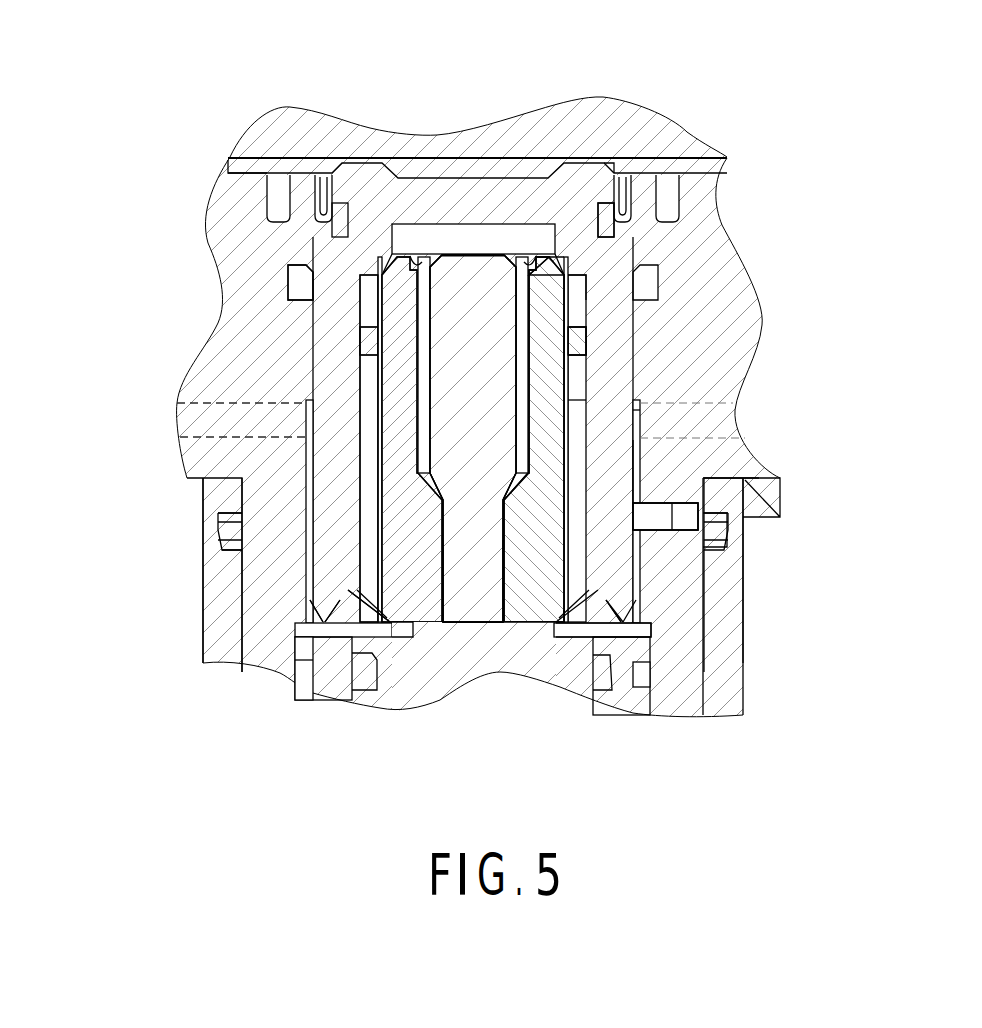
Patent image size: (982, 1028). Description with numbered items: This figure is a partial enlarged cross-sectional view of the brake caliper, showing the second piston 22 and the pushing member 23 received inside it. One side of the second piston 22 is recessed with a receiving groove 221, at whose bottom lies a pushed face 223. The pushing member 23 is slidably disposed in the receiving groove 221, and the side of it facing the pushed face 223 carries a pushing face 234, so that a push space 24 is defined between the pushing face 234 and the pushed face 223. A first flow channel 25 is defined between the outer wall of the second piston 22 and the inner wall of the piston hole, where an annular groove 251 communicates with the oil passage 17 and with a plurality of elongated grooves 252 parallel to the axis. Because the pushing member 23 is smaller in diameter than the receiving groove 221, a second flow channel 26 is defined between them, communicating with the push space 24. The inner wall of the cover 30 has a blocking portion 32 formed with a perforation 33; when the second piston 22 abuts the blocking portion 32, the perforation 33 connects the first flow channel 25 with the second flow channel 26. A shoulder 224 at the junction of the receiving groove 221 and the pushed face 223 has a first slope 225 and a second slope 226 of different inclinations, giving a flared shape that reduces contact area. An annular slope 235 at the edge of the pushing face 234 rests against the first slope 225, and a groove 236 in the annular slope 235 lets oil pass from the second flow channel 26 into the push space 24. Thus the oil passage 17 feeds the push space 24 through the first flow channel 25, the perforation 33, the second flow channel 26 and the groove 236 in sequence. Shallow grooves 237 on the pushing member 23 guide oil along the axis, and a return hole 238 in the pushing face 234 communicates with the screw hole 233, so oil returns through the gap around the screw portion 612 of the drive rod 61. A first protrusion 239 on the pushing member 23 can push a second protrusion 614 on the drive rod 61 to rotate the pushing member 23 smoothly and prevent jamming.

The oil passage 17 is at (200, 403).
The second piston 22 is at (583, 182).
The receiving groove 221 is at (367, 368).
The pushed face 223 is at (438, 226).
The shoulder 224 is at (600, 207).
The first slope 225 is at (553, 263).
The second slope 226 is at (556, 278).
The shallow grooves 237 is at (563, 308).
The return hole 238 is at (563, 352).
The first protrusion 239 is at (397, 626).
The pushing member 23 is at (553, 582).
The screw hole 233 is at (513, 600).
The pushing face 234 is at (392, 260).
The annular slope 235 is at (392, 259).
The groove 236 is at (543, 262).
The push space 24 is at (493, 243).
The first flow channel 25 is at (637, 487).
The annular groove 251 is at (640, 413).
The elongated grooves 252 is at (640, 468).
The second flow channel 26 is at (567, 410).
The cover 30 is at (650, 700).
The blocking portion 32 is at (304, 647).
The perforation 33 is at (607, 632).
The drive rod 61 is at (388, 667).
The screw portion 612 is at (475, 540).
The second protrusion 614 is at (411, 623).